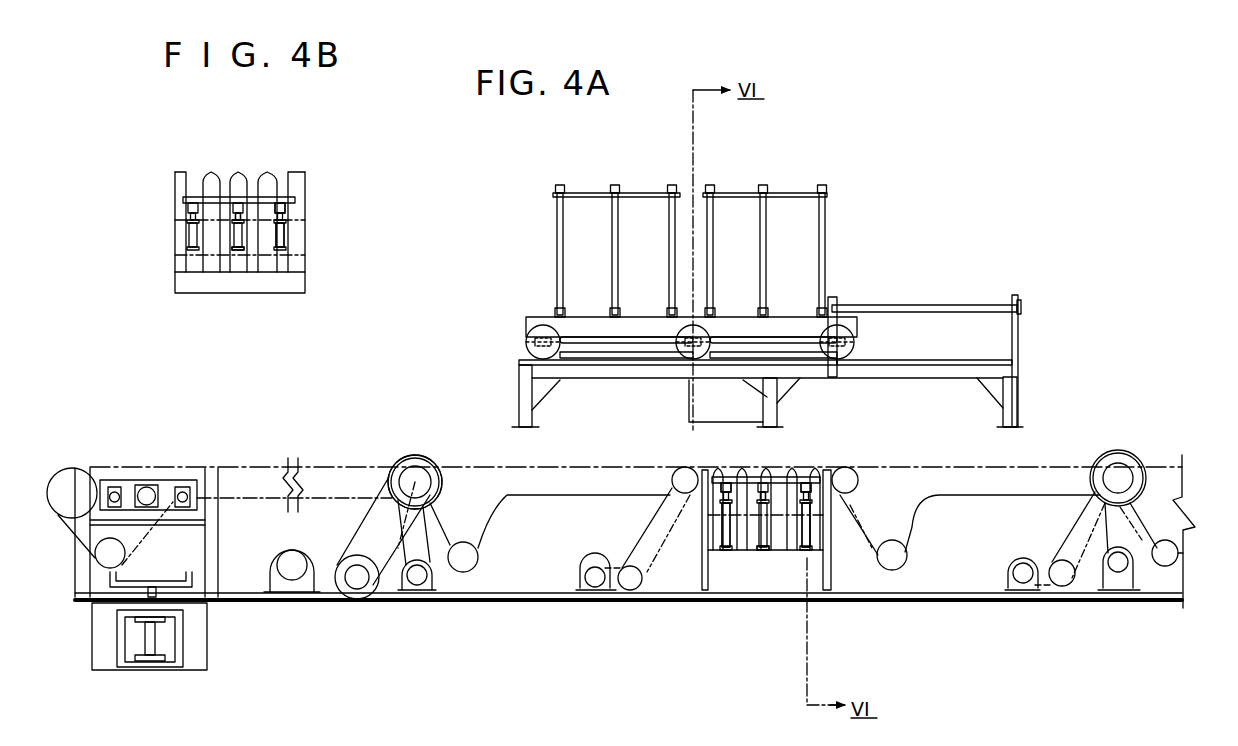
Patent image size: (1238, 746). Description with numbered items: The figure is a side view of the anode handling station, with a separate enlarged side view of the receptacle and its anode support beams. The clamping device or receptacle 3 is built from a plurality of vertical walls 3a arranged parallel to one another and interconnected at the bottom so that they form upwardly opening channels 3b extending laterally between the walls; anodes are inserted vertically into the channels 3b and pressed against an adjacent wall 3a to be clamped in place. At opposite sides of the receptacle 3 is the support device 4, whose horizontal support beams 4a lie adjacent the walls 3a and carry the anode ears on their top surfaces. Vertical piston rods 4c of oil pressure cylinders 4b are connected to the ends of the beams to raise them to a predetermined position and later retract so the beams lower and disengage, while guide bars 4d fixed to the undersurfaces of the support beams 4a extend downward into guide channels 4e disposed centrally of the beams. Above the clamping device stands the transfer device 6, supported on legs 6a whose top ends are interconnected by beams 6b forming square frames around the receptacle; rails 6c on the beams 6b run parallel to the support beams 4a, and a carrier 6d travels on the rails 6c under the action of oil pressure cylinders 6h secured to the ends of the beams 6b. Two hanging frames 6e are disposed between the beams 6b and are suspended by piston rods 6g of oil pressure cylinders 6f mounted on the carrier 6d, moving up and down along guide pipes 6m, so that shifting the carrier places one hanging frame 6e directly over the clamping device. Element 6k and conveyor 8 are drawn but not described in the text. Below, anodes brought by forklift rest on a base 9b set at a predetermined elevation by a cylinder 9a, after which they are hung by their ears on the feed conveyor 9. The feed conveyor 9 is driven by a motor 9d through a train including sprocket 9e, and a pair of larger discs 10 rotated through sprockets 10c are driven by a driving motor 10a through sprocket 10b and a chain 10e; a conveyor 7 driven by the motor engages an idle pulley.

In FIG. 4B, the receptacle 3 is at (286, 158).
In FIG. 4A, the receptacle 3 is at (820, 460).
In FIG. 4B, the vertical walls 3a is at (211, 172).
In FIG. 4A, the vertical walls 3a is at (742, 468).
In FIG. 4B, the channels 3b is at (256, 178).
In FIG. 4A, the channels 3b is at (792, 468).
In FIG. 4B, the support device 4 is at (245, 260).
In FIG. 4A, the support device 4 is at (765, 558).
In FIG. 4B, the support beams 4a is at (183, 200).
In FIG. 4A, the support beams 4a is at (800, 490).
In FIG. 4B, the oil pressure cylinders 4b is at (285, 237).
In FIG. 4A, the oil pressure cylinders 4b is at (723, 528).
In FIG. 4B, the vertical piston rods 4c is at (285, 216).
In FIG. 4A, the vertical piston rods 4c is at (817, 498).
In FIG. 4B, the guide bars 4d is at (236, 218).
In FIG. 4A, the guide bars 4d is at (758, 548).
In FIG. 4B, the guide channels 4e is at (238, 251).
In FIG. 4A, the guide channels 4e is at (787, 552).
In FIG. 4A, the transfer device 6 is at (921, 290).
In FIG. 4A, the legs 6a is at (519, 418).
In FIG. 4A, the beams 6b is at (585, 373).
In FIG. 4A, the rails 6c is at (925, 365).
In FIG. 4A, the carrier 6d is at (542, 318).
In FIG. 4A, the hanging frames 6e is at (638, 358).
In FIG. 4A, the oil pressure cylinders 6f is at (618, 258).
In FIG. 4A, the piston rods 6g is at (613, 338).
In FIG. 4A, the oil pressure cylinders 6h is at (965, 305).
In FIG. 4A, the roller 6k is at (525, 349).
In FIG. 4A, the guide pipes 6m is at (557, 253).
In FIG. 4A, the conveyor 7 is at (557, 465).
In FIG. 4A, the belt conveyor 8 is at (975, 465).
In FIG. 4A, the feed conveyor 9 is at (243, 467).
In FIG. 4A, the cylinder 9a is at (153, 637).
In FIG. 4A, the base 9b is at (150, 585).
In FIG. 4A, the motor 9d is at (275, 592).
In FIG. 4A, the sprocket 9e is at (289, 552).
In FIG. 4A, the discs 10 is at (412, 455).
In FIG. 4A, the driving motor 10a is at (410, 589).
In FIG. 4A, the sprocket 10b is at (428, 581).
In FIG. 4A, the sprockets 10c is at (433, 480).
In FIG. 4A, the chain 10e is at (457, 547).